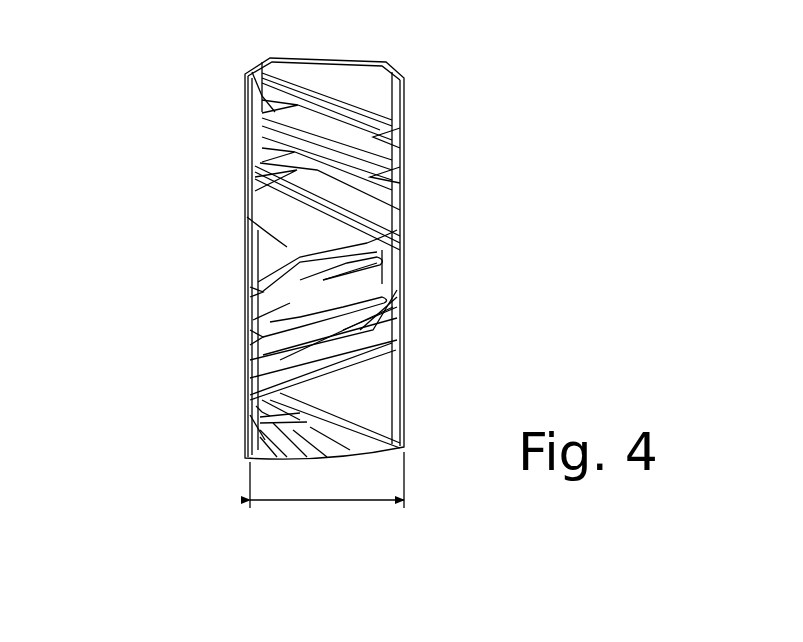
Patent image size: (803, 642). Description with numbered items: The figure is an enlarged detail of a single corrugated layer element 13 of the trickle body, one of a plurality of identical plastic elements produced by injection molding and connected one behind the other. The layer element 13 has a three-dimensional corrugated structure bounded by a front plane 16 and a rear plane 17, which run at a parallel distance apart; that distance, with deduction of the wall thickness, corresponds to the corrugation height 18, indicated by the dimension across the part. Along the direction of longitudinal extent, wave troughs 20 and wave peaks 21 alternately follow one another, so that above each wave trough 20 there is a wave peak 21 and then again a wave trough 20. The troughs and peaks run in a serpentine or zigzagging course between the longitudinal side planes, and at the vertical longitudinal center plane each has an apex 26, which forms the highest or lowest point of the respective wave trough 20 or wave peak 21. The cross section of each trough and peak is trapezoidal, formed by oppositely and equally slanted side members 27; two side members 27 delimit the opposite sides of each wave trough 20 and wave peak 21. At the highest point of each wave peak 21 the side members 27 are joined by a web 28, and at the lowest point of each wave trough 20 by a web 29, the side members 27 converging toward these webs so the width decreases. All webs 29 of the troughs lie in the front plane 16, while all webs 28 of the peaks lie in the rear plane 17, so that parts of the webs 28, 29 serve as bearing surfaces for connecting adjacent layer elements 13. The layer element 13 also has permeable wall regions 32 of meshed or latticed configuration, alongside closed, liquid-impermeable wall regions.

The layer element 13 is at (212, 73).
The front plane 16 is at (486, 263).
The rear plane 17 is at (166, 270).
The corrugation height 18 is at (330, 504).
The wave trough 20 is at (357, 86).
The wave peak 21 is at (240, 118).
The apex 26 is at (262, 222).
The side member 27 is at (280, 270).
The web 28 is at (408, 300).
The web 29 is at (245, 90).
The permeable wall region 32 is at (240, 435).